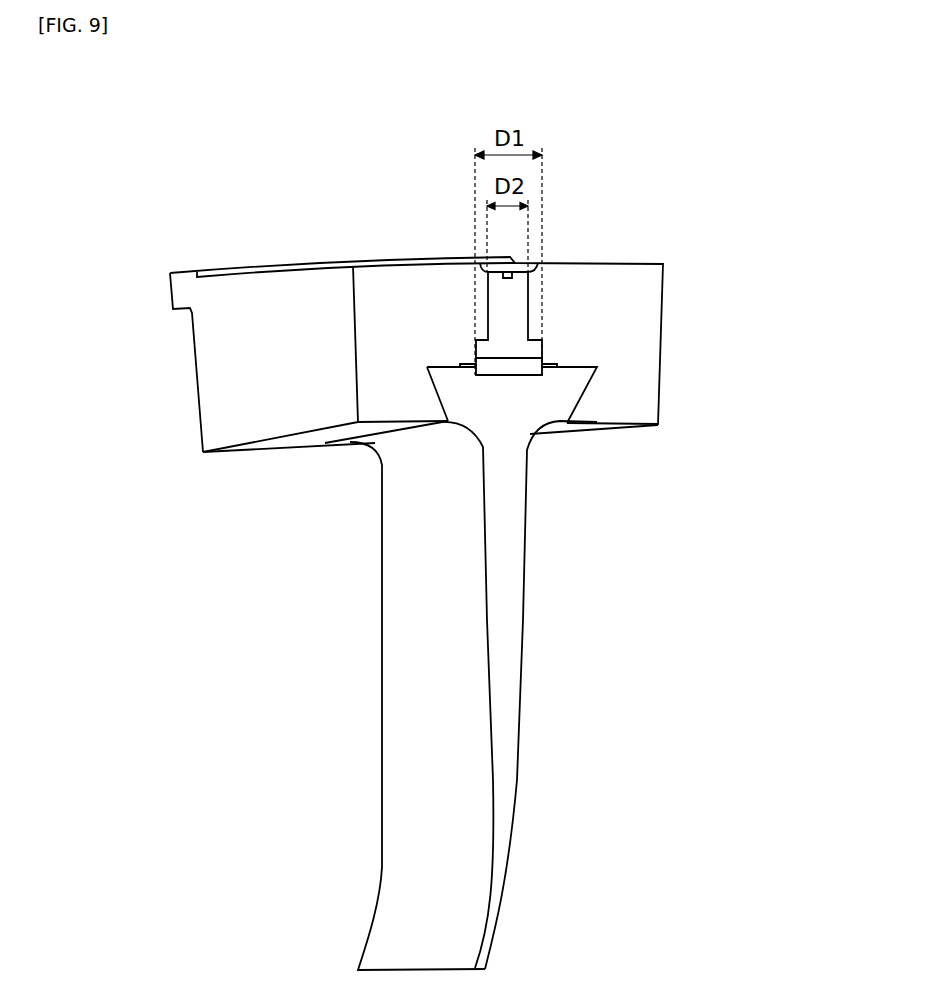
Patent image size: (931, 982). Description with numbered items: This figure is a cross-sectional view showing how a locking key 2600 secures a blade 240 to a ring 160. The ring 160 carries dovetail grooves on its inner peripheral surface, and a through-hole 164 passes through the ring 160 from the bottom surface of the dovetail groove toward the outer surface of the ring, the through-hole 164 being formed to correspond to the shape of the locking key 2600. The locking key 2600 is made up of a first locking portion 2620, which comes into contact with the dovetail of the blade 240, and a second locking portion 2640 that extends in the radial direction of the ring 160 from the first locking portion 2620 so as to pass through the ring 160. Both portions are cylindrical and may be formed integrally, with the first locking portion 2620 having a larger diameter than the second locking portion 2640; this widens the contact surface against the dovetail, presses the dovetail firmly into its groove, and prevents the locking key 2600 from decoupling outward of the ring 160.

The ring 160 is at (258, 352).
The through-hole 164 is at (500, 325).
The shaft 240 is at (420, 688).
The locking key 2600 is at (634, 347).
The first locking portion 2620 is at (510, 368).
The second locking portion 2640 is at (512, 313).